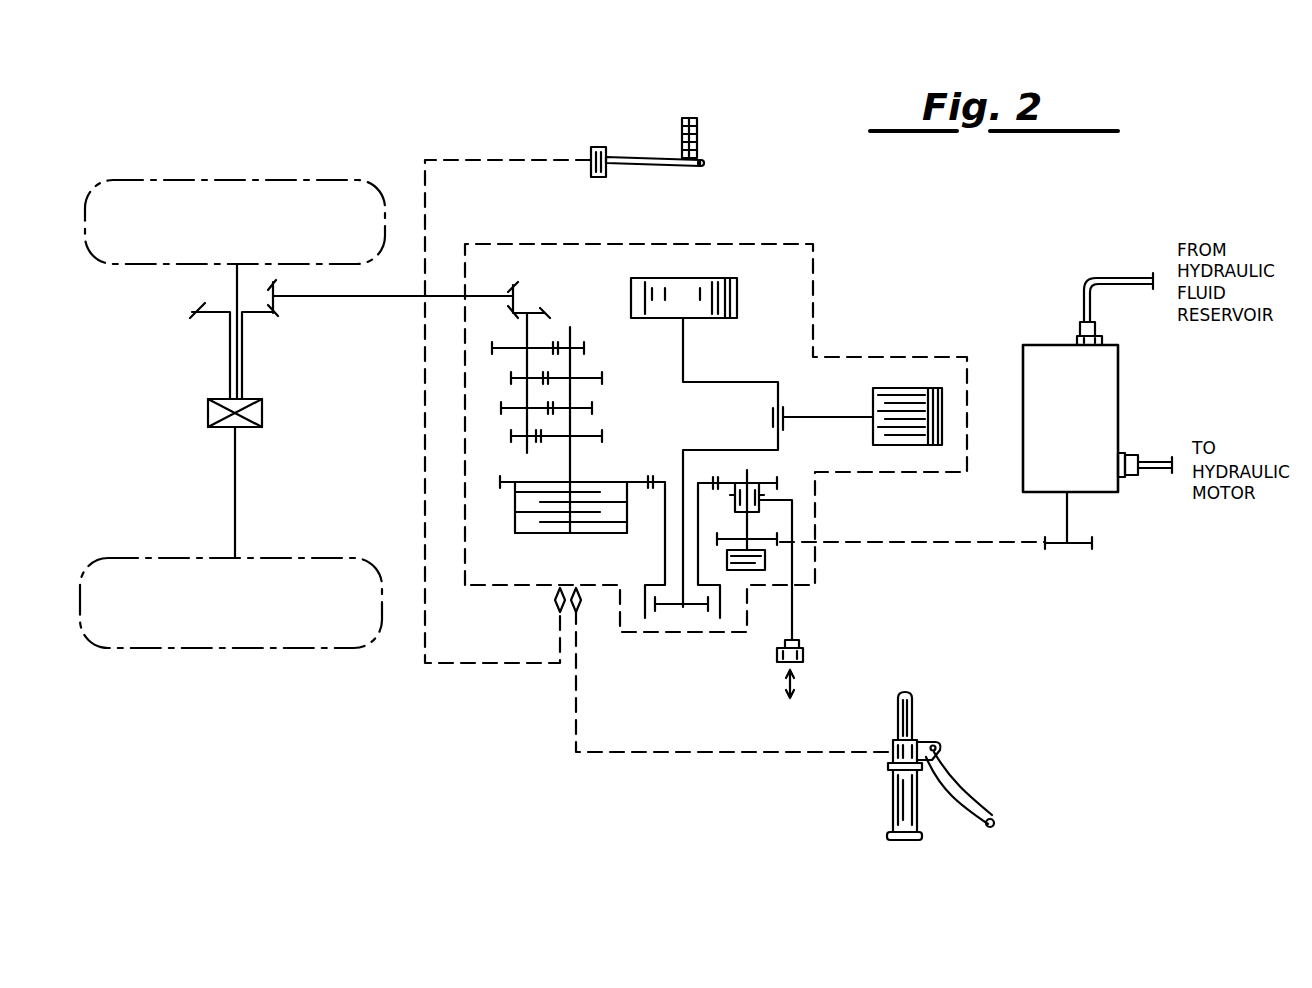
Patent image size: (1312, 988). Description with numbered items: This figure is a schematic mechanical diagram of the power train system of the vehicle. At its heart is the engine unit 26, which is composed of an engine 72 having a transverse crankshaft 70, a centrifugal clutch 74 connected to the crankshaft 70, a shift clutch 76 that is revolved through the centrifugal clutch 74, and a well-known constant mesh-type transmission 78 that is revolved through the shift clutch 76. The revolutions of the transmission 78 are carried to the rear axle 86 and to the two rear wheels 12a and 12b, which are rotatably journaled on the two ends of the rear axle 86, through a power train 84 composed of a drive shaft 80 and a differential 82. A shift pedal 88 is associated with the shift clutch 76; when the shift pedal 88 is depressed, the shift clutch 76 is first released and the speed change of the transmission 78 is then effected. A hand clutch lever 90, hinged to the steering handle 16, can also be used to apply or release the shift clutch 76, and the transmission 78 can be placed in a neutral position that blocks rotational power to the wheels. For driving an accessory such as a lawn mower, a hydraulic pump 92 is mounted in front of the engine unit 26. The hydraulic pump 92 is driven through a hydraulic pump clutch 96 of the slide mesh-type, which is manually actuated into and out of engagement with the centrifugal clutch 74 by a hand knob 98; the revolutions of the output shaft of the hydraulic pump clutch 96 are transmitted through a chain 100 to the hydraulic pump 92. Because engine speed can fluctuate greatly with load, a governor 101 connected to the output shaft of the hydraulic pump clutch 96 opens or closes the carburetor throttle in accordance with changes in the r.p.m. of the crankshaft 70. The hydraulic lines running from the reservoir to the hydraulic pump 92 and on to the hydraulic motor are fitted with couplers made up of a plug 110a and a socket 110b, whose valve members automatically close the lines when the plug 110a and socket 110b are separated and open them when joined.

The rear wheel 12a is at (190, 180).
The rear wheel 12b is at (190, 648).
The steering handle 16 is at (912, 710).
The engine unit 26 is at (754, 241).
The crankshaft 70 is at (683, 352).
The engine 72 is at (890, 357).
The centrifugal clutch 74 is at (680, 618).
The shift clutch 76 is at (515, 505).
The transmission 78 is at (502, 387).
The drive shaft 80 is at (388, 297).
The differential 82 is at (208, 410).
The power train 84 is at (270, 320).
The rear axle 86 is at (235, 493).
The shift pedal 88 is at (680, 133).
The hand clutch lever 90 is at (965, 795).
The hydraulic pump 92 is at (1115, 400).
The hydraulic pump clutch 96 is at (757, 478).
The hand knob 98 is at (805, 655).
The chain 100 is at (948, 545).
The governor 101 is at (765, 560).
The plug 110a is at (1077, 322).
The socket 110b is at (1075, 340).